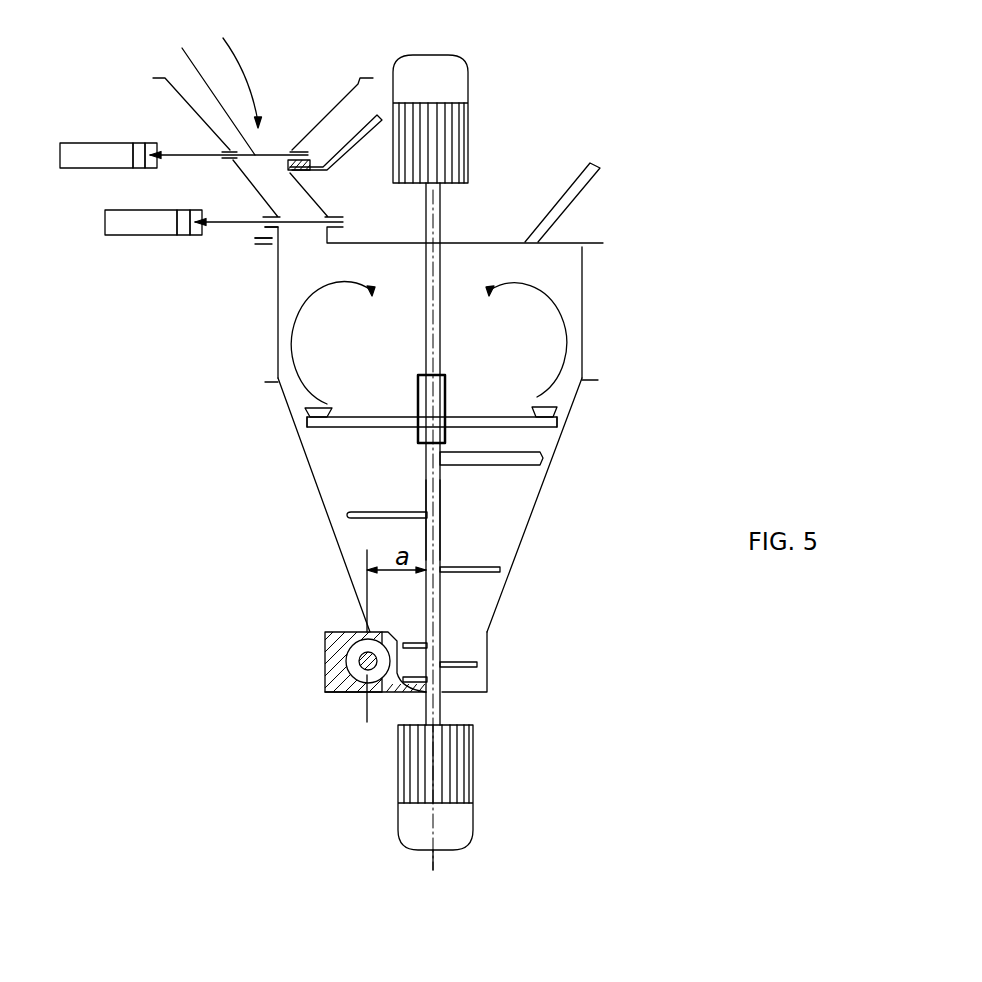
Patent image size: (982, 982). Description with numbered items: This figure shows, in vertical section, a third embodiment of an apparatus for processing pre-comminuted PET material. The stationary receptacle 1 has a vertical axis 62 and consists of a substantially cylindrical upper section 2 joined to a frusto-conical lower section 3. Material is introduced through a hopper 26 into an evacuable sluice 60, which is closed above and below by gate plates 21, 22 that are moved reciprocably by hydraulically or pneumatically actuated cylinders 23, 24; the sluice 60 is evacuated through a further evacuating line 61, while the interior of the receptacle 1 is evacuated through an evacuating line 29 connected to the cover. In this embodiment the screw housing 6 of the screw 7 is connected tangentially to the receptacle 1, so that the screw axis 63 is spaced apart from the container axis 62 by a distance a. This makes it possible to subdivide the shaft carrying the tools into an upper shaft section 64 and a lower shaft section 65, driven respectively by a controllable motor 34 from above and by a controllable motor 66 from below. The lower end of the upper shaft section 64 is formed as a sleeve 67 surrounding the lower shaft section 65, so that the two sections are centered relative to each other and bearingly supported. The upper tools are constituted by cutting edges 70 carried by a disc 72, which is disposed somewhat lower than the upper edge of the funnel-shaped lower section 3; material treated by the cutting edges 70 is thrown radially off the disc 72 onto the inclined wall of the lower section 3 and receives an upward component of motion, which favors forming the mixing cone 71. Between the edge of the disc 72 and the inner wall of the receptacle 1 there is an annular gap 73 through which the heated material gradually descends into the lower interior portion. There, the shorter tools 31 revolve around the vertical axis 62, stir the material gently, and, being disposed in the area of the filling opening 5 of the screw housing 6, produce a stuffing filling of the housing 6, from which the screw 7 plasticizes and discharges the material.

The receptacle 1 is at (562, 455).
The cylindrical upper section 2 is at (585, 305).
The frusto-conical lower section 3 is at (542, 532).
The filling opening 5 is at (388, 632).
The housing 6 is at (335, 643).
The screw 7 is at (357, 665).
The gate plate 21 is at (248, 115).
The gate plate 22 is at (300, 228).
The cylinder 23 is at (98, 162).
The cylinder 24 is at (142, 222).
The hopper 26 is at (325, 112).
The evacuating line 29 is at (567, 195).
The tools 31 is at (347, 515).
The controllable motor 34 is at (437, 150).
The sluice 60 is at (173, 187).
The further evacuating line 61 is at (347, 137).
The vertical axis 62 is at (437, 862).
The screw axis 63 is at (362, 660).
The upper shaft section 64 is at (438, 337).
The lower shaft section 65 is at (440, 512).
The controllable motor 66 is at (473, 767).
The sleeve 67 is at (445, 403).
The cutting edges 70 is at (322, 407).
The mixing cone 71 is at (317, 302).
The disc 72 is at (355, 420).
The annular gap 73 is at (302, 420).